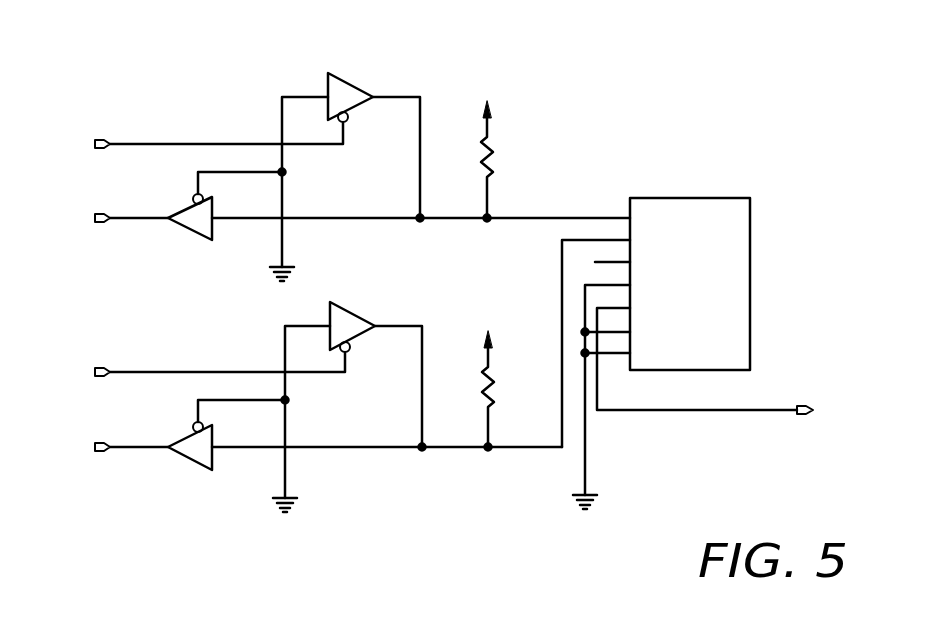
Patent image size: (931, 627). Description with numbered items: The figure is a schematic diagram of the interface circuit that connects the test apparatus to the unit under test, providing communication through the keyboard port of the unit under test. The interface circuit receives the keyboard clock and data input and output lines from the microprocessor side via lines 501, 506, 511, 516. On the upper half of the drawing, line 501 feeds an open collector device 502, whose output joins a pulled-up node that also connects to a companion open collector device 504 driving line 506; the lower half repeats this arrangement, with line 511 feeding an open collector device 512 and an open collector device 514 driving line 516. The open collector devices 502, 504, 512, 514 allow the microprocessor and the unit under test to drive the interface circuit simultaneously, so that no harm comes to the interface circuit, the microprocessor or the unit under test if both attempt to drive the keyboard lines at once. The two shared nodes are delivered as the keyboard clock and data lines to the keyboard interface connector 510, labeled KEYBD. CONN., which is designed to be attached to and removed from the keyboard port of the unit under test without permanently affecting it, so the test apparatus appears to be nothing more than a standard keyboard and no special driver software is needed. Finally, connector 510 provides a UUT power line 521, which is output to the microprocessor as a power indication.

The line 501 is at (123, 140).
The open collector device 502 is at (328, 77).
The open collector device 504 is at (190, 197).
The line 506 is at (123, 222).
The keyboard interface connector 510 is at (692, 210).
The line 511 is at (123, 368).
The open collector device 512 is at (330, 310).
The open collector device 514 is at (190, 423).
The line 516 is at (125, 452).
The UUT power line 521 is at (682, 415).